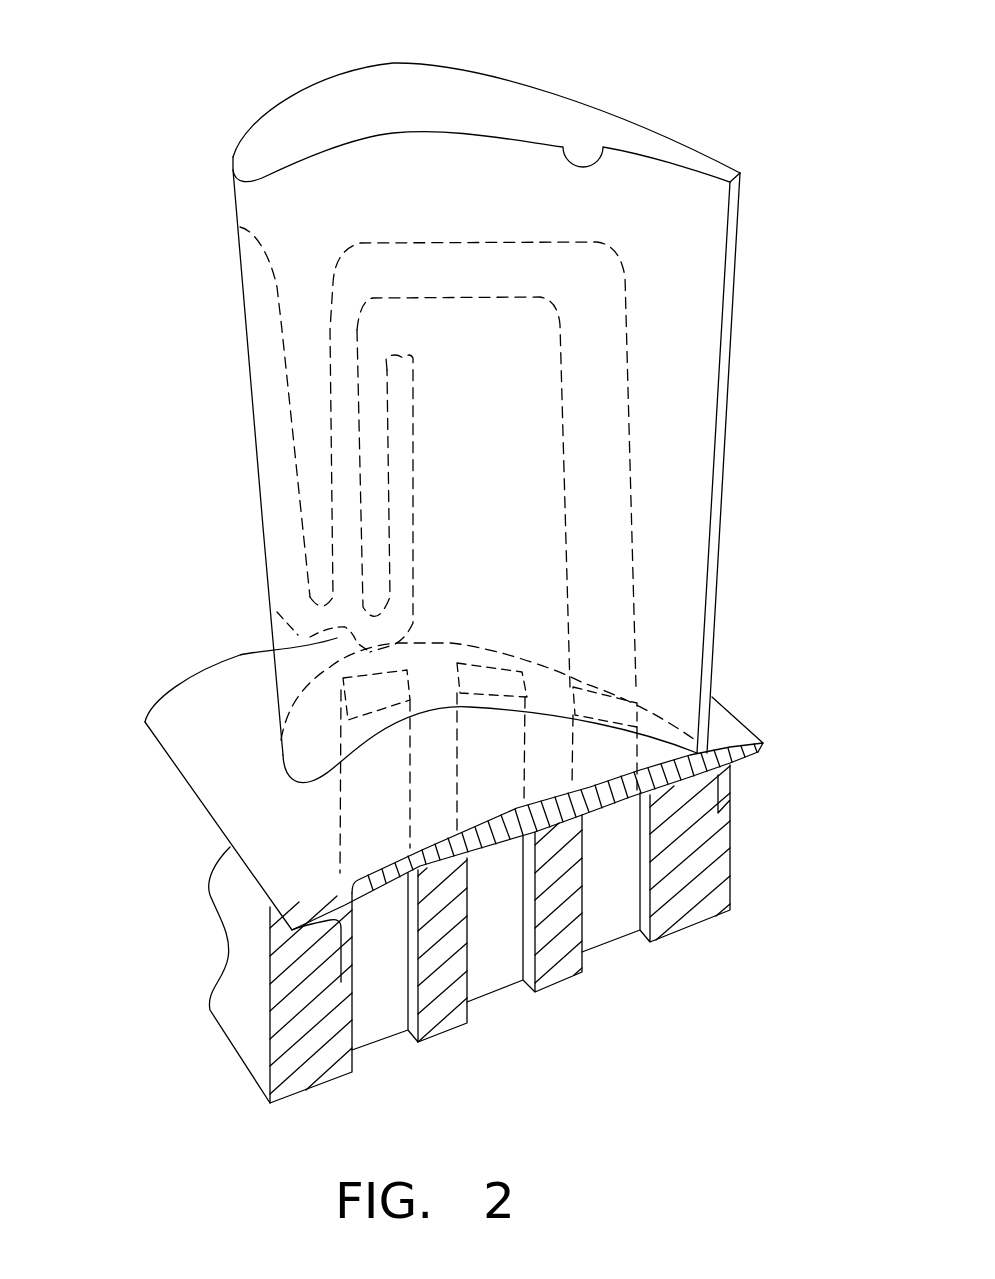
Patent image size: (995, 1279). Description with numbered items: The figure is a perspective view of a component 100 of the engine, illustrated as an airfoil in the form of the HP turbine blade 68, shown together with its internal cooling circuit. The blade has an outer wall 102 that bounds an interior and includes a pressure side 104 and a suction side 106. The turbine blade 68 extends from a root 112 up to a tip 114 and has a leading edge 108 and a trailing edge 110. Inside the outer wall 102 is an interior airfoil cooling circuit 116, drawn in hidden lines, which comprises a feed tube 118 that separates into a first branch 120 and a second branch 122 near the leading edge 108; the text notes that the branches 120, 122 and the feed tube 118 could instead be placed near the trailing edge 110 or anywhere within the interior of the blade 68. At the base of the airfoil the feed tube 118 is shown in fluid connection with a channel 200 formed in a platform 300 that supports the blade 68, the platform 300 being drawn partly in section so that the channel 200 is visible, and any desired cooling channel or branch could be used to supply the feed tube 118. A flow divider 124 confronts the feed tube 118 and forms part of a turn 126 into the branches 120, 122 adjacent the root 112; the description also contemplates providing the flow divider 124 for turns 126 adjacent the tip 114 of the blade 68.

The HP turbine blade 68 is at (253, 58).
The component 100 is at (106, 125).
The outer wall 102 is at (263, 200).
The pressure side 104 is at (600, 153).
The suction side 106 is at (563, 92).
The leading edge 108 is at (240, 287).
The trailing edge 110 is at (722, 463).
The root 112 is at (663, 733).
The tip 114 is at (707, 198).
The interior airfoil cooling circuit 116 is at (628, 275).
The feed tube 118 is at (342, 415).
The first branch 120 is at (285, 480).
The second branch 122 is at (403, 562).
The flow divider 124 is at (273, 660).
The turn 126 is at (303, 615).
The channel 200 is at (600, 920).
The platform 300 is at (738, 738).